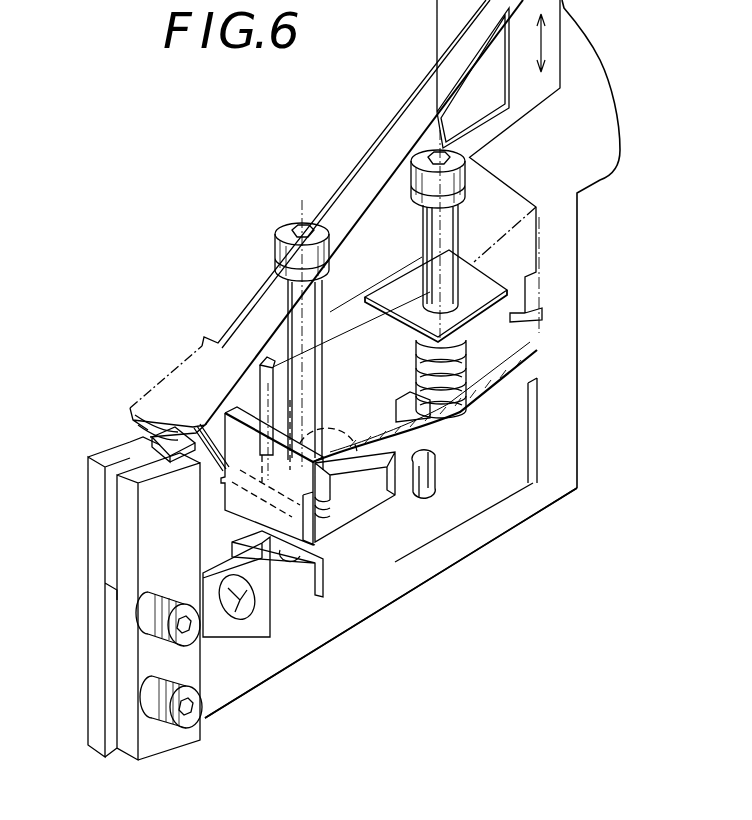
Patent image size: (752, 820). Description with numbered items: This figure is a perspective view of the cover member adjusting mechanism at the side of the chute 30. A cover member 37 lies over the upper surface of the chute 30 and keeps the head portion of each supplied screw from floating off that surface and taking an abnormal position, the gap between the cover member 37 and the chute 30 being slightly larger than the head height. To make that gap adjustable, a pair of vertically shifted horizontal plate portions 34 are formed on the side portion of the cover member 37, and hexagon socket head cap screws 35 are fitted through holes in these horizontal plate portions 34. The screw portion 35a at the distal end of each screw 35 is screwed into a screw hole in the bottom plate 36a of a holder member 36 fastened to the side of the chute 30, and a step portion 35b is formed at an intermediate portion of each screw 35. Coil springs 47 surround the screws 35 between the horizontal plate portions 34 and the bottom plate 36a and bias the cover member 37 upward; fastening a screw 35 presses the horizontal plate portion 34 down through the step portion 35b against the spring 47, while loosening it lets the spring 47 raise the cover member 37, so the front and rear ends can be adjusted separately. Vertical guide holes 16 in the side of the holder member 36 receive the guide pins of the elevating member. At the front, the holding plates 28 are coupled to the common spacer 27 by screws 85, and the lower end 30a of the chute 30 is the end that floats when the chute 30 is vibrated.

The vertical guide hole 16 is at (433, 483).
The spacer 27 is at (108, 633).
The holding plate 28 is at (93, 722).
The chute 30 is at (592, 80).
The lower end of the chute 30a is at (420, 583).
The horizontal plate portion 34 is at (537, 317).
The hexagon socket head cap screw 35 is at (307, 302).
The screw portion 35a is at (463, 378).
The step portion 35b is at (289, 472).
The holder member 36 is at (417, 530).
The bottom plate 36a is at (413, 430).
The cover member 37 is at (192, 375).
The coil spring 47 is at (482, 395).
The screw 85 is at (167, 598).